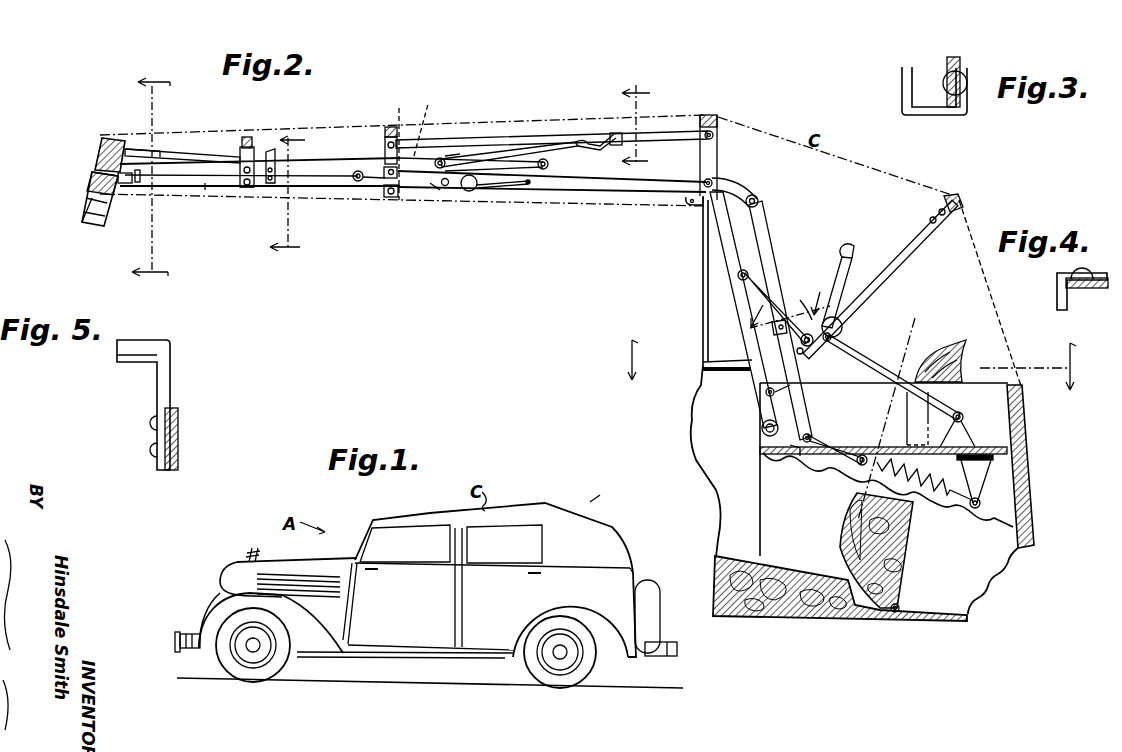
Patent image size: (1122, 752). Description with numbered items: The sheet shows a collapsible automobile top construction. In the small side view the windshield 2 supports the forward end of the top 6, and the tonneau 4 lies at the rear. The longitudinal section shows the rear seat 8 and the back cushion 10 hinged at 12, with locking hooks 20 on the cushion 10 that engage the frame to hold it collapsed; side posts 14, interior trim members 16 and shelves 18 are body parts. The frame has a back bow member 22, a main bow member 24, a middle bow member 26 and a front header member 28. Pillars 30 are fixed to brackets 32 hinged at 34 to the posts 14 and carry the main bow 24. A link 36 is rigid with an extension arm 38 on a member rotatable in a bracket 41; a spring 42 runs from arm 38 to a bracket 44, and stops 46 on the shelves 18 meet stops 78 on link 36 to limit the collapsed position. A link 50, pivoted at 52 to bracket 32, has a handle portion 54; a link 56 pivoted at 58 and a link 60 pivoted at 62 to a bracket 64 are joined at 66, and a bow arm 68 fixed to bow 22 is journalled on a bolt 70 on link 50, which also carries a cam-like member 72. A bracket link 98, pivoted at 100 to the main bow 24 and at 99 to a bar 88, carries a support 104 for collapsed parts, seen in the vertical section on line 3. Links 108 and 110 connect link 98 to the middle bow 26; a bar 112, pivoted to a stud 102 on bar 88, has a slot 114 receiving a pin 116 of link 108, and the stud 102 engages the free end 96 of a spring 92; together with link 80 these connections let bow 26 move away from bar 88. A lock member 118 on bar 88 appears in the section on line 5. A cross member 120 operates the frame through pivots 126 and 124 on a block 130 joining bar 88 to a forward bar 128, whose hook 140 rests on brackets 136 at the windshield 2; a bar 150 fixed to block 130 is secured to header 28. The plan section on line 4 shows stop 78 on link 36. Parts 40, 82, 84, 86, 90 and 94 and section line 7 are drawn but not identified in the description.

In FIG. 2, the windshield 2 is at (90, 182).
In FIG. 1, the windshield 2 is at (372, 529).
In FIG. 2, the tonneau 4 is at (1038, 490).
In FIG. 1, the tonneau 4 is at (614, 585).
In FIG. 1, the top 6 is at (598, 500).
In FIG. 2, the rear seat 8 is at (790, 590).
In FIG. 2, the back cushion 10 is at (858, 527).
In FIG. 2, the hinge 12 is at (900, 604).
In FIG. 2, the side posts 14 is at (704, 411).
In FIG. 2, the interior trim members 16 is at (152, 190).
In FIG. 2, the shelves or supports 18 is at (775, 460).
In FIG. 2, the locking hooks 20 is at (965, 330).
In FIG. 2, the back bow member 22 is at (960, 198).
In FIG. 2, the main bow member 24 is at (712, 116).
In FIG. 2, the middle bow member 26 is at (394, 127).
In FIG. 2, the front bow or header member 28 is at (102, 140).
In FIG. 2, the pillars 30 is at (712, 273).
In FIG. 2, the brackets 32 is at (750, 345).
In FIG. 2, the hinge 34 is at (762, 428).
In FIG. 2, the link 36 is at (762, 220).
In FIG. 4, the link 36 is at (1090, 290).
In FIG. 2, the extension arm 38 is at (860, 455).
In FIG. 2, the link 40 is at (838, 455).
In FIG. 2, the bracket 41 is at (797, 455).
In FIG. 2, the spring 42 is at (968, 505).
In FIG. 2, the bracket 44 is at (1012, 452).
In FIG. 2, the stops 46 is at (906, 408).
In FIG. 2, the link 50 is at (778, 392).
In FIG. 2, the pivot 52 is at (765, 391).
In FIG. 2, the forwardly extending offset portion 54 is at (848, 252).
In FIG. 2, the link 56 is at (749, 274).
In FIG. 2, the pivot 58 is at (739, 272).
In FIG. 2, the link 60 is at (873, 360).
In FIG. 2, the pivot 62 is at (978, 395).
In FIG. 2, the bracket 64 is at (968, 440).
In FIG. 2, the pivot 66 is at (817, 357).
In FIG. 2, the bow arm 68 is at (925, 224).
In FIG. 2, the bolt 70 is at (800, 300).
In FIG. 2, the cam-like member 72 is at (842, 326).
In FIG. 2, the stops 78 is at (772, 328).
In FIG. 4, the stops 78 is at (1058, 292).
In FIG. 2, the link 80 is at (613, 194).
In FIG. 2, the pivot 82 is at (712, 180).
In FIG. 2, the curved member 84 is at (740, 186).
In FIG. 2, the pivot 86 is at (759, 199).
In FIG. 2, the bar 88 is at (412, 182).
In FIG. 5, the bar 88 is at (178, 431).
In FIG. 2, the pivot 90 is at (447, 186).
In FIG. 2, the spring 92 is at (472, 191).
In FIG. 2, the rod 94 is at (517, 187).
In FIG. 2, the free end 96 is at (547, 150).
In FIG. 2, the bracket link 98 is at (668, 132).
In FIG. 3, the bracket link 98 is at (962, 62).
In FIG. 2, the pivot 99 is at (437, 192).
In FIG. 2, the pivot 100 is at (712, 133).
In FIG. 2, the stud 102 is at (372, 182).
In FIG. 2, the support 104 is at (614, 133).
In FIG. 3, the support 104 is at (911, 112).
In FIG. 2, the link 108 is at (454, 155).
In FIG. 2, the link 110 is at (437, 153).
In FIG. 2, the bar 112 is at (357, 170).
In FIG. 2, the slot 114 is at (493, 165).
In FIG. 2, the pin 116 is at (443, 158).
In FIG. 2, the lock member 118 is at (272, 150).
In FIG. 5, the lock member 118 is at (130, 345).
In FIG. 2, the cross member 120 is at (248, 137).
In FIG. 2, the pivot 124 is at (249, 188).
In FIG. 2, the pivot 126 is at (208, 190).
In FIG. 2, the forward bar 128 is at (200, 178).
In FIG. 2, the block member 130 is at (241, 150).
In FIG. 2, the brackets or hooks 136 is at (128, 184).
In FIG. 2, the hook 140 is at (98, 222).
In FIG. 2, the bar 150 is at (200, 152).
In FIG. 2, the section line 3— 3 is at (641, 120).
In FIG. 2, the section line 5— 5 is at (291, 195).
In FIG. 2, the section line 7- 7 is at (151, 176).